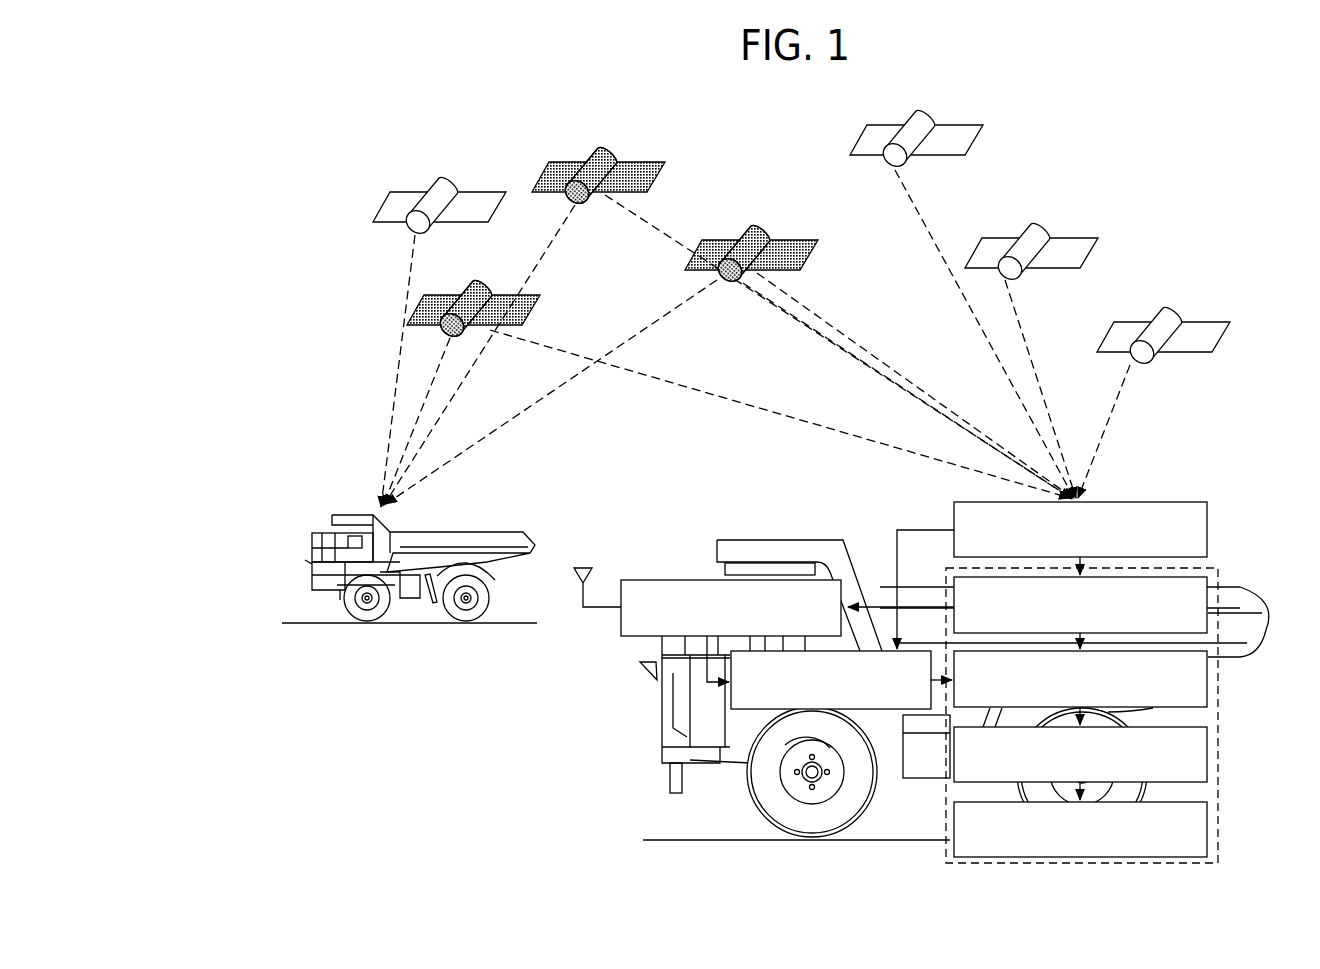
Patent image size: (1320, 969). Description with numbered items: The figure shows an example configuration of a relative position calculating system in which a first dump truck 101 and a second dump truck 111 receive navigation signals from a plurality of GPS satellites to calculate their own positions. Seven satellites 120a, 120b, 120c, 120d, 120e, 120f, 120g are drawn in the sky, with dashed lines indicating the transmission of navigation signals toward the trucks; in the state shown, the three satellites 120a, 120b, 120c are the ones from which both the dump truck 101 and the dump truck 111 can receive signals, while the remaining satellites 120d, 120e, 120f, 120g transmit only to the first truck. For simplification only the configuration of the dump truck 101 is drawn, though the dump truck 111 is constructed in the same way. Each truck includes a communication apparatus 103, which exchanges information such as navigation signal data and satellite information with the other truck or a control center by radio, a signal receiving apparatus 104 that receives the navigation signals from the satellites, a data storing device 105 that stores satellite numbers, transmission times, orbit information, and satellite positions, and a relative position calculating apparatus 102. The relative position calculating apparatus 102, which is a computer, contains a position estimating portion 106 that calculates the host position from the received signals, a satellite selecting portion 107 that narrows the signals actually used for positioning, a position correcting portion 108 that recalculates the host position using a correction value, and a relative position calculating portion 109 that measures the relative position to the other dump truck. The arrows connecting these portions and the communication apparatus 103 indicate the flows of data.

The dump truck 101 is at (954, 707).
The relative position calculating apparatus 102 is at (1218, 855).
The communication apparatus 103 is at (669, 580).
The signal receiving apparatus 104 is at (1207, 530).
The data storing device 105 is at (903, 755).
The position estimating portion 106 is at (1207, 580).
The satellite selecting portion 107 is at (1207, 683).
The position correcting portion 108 is at (1207, 752).
The relative position calculating portion 109 is at (1207, 817).
The dump truck 111 is at (418, 588).
The satellite 120a is at (627, 160).
The satellite 120b is at (447, 297).
The satellite 120c is at (777, 242).
The satellite 120d is at (953, 125).
The satellite 120e is at (1062, 238).
The satellite 120f is at (1188, 322).
The satellite 120g is at (469, 190).